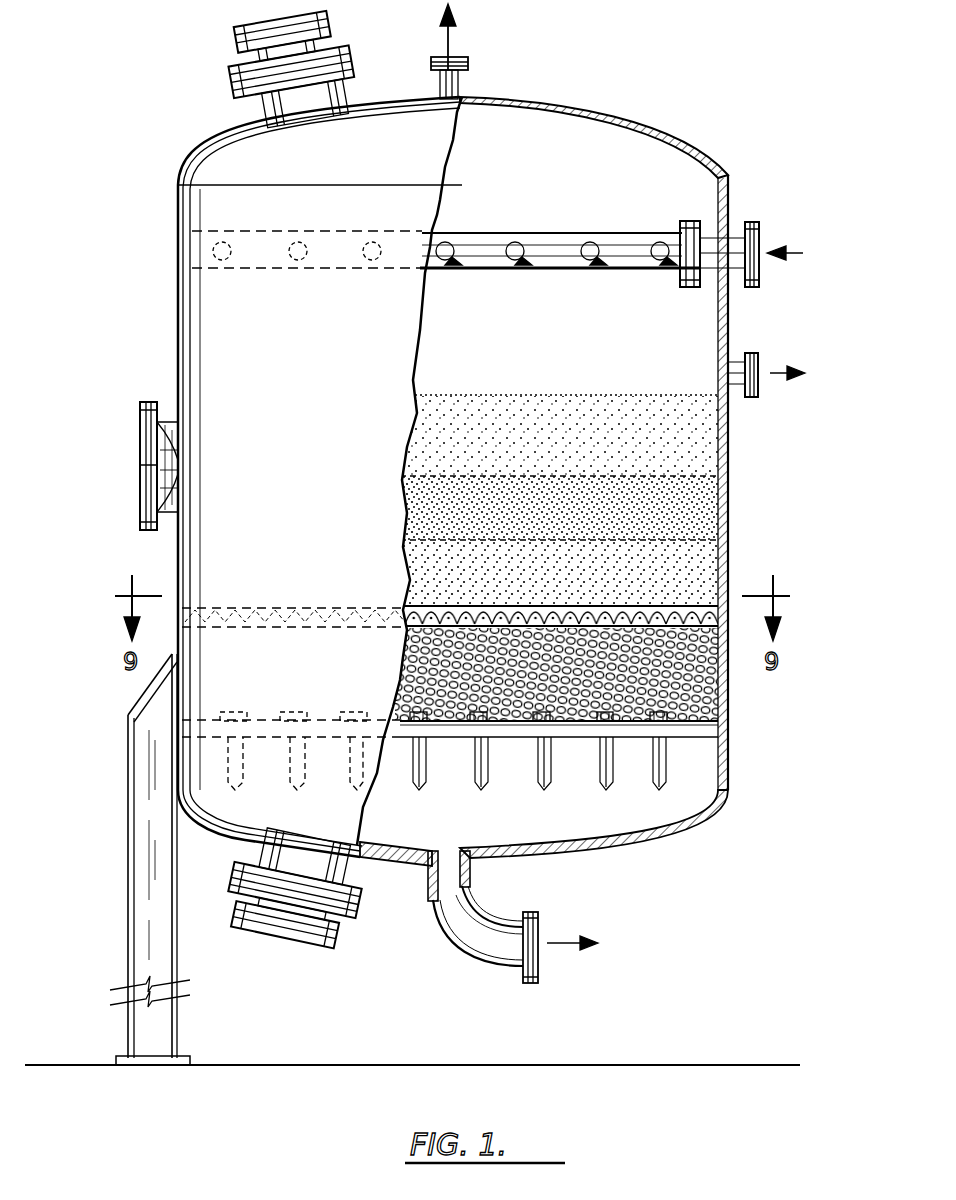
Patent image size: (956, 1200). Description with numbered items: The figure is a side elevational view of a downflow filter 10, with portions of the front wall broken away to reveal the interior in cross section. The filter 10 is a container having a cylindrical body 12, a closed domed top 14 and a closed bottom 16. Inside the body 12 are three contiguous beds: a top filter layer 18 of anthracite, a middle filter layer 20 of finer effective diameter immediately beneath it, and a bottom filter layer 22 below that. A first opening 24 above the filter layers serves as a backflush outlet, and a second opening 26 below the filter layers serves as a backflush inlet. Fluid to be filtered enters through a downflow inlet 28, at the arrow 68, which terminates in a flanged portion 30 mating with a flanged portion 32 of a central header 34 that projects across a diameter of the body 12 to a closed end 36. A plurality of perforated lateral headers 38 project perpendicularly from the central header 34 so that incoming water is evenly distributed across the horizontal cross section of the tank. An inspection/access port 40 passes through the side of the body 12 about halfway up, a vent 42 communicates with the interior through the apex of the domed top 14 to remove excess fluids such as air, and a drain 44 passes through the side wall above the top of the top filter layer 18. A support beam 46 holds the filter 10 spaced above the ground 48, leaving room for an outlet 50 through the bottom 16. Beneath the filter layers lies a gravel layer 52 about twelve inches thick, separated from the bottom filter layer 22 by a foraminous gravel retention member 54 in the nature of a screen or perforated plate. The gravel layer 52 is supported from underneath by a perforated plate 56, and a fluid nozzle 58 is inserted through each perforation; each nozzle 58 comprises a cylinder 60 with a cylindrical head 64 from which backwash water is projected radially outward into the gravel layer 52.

The downflow filter 10 is at (112, 183).
The cylindrical body 12 is at (728, 478).
The domed top 14 is at (620, 115).
The closed bottom 16 is at (622, 848).
The top filter layer 18 is at (680, 443).
The middle filter layer 20 is at (695, 512).
The bottom filter layer 22 is at (700, 550).
The first opening 24 is at (262, 104).
The second opening 26 is at (340, 878).
The downflow inlet 28 is at (762, 235).
The flanged portion 30 is at (700, 228).
The flanged portion 32 is at (688, 234).
The central header 34 is at (626, 245).
The closed end 36 is at (192, 255).
The lateral headers 38 is at (515, 242).
The inspection/access port 40 is at (145, 472).
The vent 42 is at (468, 65).
The drain 44 is at (760, 365).
The support beam 46 is at (130, 833).
The ground 48 is at (660, 1063).
The outlet 50 is at (470, 905).
The gravel layer 52 is at (712, 735).
The foraminous gravel retention member 54 is at (688, 622).
The perforated plate 56 is at (440, 740).
The fluid nozzle 58 is at (418, 788).
The cylinder 60 is at (608, 783).
The cylindrical head 64 is at (355, 711).
The arrow 68 is at (800, 253).